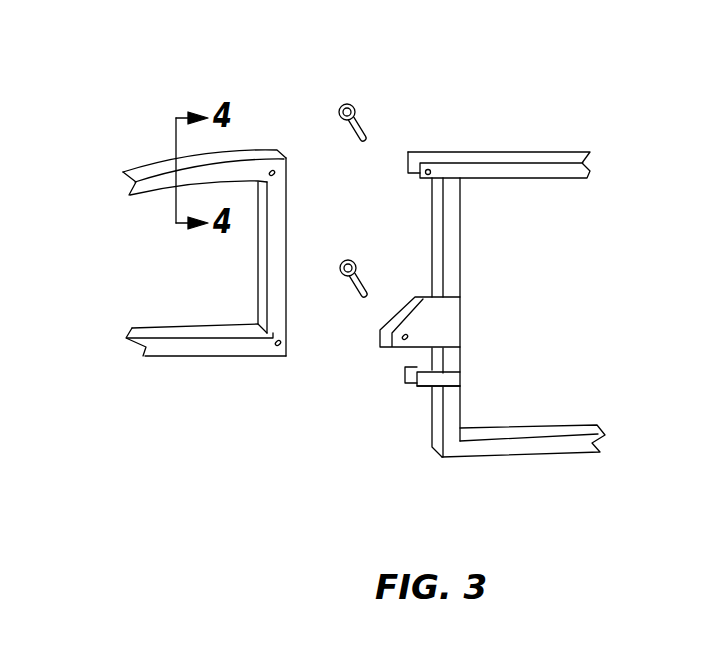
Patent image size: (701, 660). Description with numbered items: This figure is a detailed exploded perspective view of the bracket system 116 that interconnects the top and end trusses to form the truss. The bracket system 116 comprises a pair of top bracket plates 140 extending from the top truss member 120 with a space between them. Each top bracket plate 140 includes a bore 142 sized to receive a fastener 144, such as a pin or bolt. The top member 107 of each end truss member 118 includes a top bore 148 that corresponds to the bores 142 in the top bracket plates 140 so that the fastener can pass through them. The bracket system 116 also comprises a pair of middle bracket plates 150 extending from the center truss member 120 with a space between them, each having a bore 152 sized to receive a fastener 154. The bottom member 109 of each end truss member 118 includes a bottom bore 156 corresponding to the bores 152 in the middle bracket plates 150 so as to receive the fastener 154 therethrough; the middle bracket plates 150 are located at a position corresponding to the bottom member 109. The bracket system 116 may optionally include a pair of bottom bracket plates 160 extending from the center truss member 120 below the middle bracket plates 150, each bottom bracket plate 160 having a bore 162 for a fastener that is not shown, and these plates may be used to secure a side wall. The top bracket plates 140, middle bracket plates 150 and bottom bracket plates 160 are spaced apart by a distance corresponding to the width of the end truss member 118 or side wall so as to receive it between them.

The top member 107 is at (152, 184).
The bottom member 109 is at (158, 332).
The bracket system 116 is at (467, 254).
The end truss member 118 is at (160, 233).
The top truss member 120 is at (530, 152).
The top bracket plates 140 is at (442, 170).
The bore 142 is at (427, 176).
The fastener 144 is at (341, 106).
The top bore 148 is at (275, 170).
The middle bracket plates 150 is at (445, 327).
The bore 152 is at (402, 341).
The fastener 154 is at (356, 299).
The bottom bore 156 is at (276, 345).
The bottom bracket plates 160 is at (448, 378).
The bore 162 is at (428, 388).